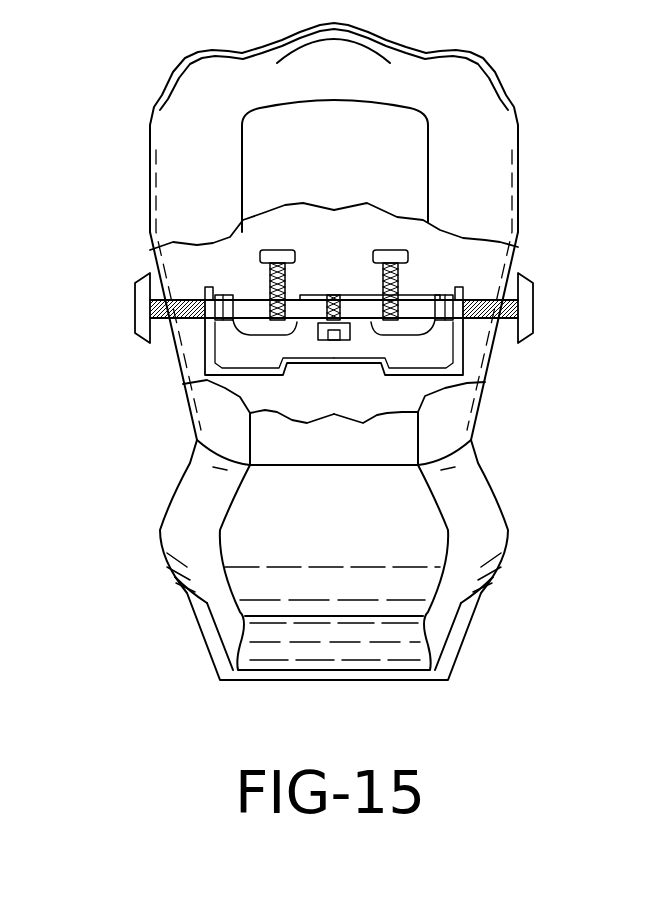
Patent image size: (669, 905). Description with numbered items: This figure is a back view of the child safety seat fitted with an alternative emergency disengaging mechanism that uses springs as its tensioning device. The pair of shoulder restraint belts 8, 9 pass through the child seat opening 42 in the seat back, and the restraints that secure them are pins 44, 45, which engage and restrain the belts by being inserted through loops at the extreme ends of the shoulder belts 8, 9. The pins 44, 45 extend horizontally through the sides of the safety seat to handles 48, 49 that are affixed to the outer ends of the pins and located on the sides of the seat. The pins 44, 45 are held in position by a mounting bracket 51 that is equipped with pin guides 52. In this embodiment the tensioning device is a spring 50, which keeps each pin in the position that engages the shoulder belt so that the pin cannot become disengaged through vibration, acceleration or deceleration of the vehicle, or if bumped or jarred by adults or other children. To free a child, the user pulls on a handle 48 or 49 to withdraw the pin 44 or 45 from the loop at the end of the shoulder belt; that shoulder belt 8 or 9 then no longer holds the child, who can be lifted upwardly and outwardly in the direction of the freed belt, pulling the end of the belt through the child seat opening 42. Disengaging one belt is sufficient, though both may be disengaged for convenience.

The child seat opening 42 is at (274, 250).
The shoulder restraint belt 9 is at (229, 240).
The shoulder restraint belt 8 is at (440, 240).
The spring 50 is at (110, 357).
The handle 48 is at (148, 310).
The handle 49 is at (520, 310).
The pin 44 is at (184, 330).
The pin 45 is at (485, 330).
The mounting bracket 51 is at (243, 355).
The pin guides 52 is at (427, 355).